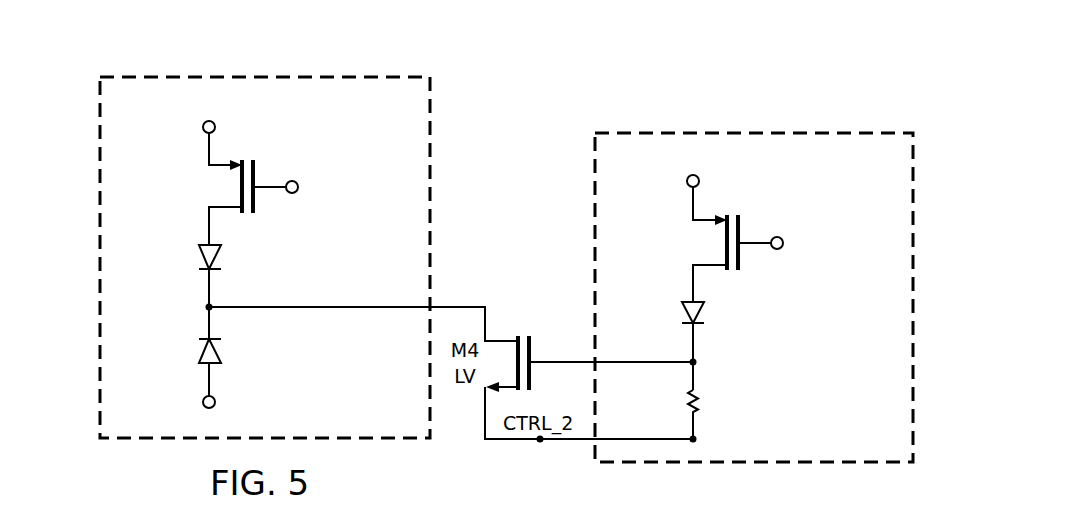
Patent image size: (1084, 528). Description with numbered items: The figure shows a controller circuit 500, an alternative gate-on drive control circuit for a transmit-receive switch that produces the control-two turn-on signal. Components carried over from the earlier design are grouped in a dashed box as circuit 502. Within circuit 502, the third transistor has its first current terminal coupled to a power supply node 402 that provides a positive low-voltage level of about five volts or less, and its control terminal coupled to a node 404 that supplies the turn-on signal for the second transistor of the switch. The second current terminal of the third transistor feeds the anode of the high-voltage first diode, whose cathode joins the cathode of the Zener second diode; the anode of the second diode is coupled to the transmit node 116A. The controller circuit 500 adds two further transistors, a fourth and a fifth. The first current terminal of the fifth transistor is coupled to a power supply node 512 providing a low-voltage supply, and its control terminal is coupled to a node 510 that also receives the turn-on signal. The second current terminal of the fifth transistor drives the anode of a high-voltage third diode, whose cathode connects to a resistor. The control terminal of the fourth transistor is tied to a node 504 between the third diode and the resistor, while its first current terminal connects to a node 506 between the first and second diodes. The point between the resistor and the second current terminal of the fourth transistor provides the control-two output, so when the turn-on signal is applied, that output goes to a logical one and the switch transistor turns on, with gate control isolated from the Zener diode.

The controller circuit 500 is at (704, 69).
The circuit 502 is at (260, 73).
The power supply node 402 is at (203, 130).
The node 404 is at (291, 181).
The transmit node 116A is at (204, 404).
The power supply node 512 is at (688, 184).
The node 510 is at (775, 237).
The node 504 is at (688, 361).
The node 506 is at (688, 438).